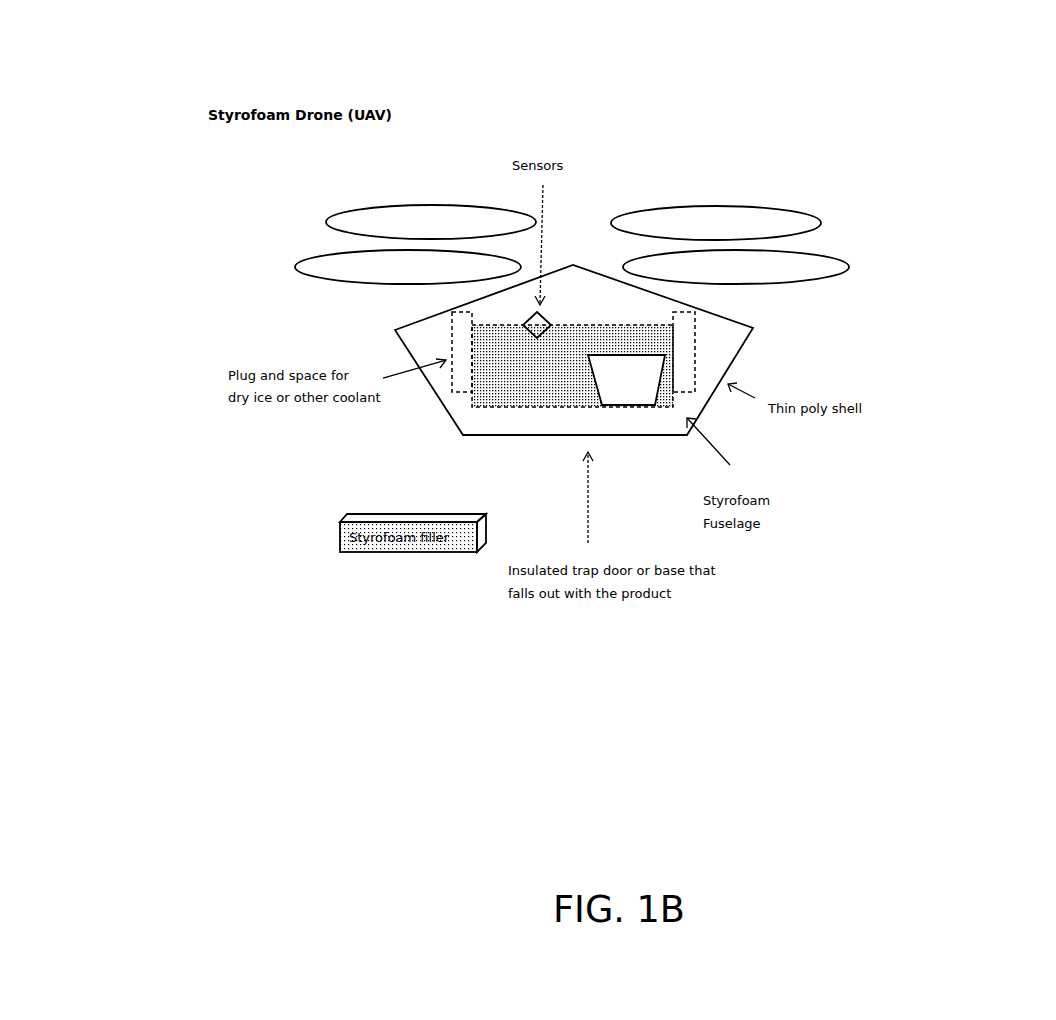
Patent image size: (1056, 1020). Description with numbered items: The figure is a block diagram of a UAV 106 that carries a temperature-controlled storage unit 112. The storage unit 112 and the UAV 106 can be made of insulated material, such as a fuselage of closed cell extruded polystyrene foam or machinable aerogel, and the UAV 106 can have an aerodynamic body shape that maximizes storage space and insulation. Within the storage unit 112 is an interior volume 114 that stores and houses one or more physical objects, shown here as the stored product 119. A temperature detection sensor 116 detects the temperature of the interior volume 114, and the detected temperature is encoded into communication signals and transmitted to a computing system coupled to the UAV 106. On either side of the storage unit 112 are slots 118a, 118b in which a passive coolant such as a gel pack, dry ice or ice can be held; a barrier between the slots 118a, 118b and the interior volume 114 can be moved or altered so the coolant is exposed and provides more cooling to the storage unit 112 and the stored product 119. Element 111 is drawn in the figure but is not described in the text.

The UAV 106 is at (650, 219).
The styrofoam fuselage with thin poly shell 111 is at (746, 349).
The temperature-controlled storage unit 112 is at (473, 393).
The interior volume 114 is at (576, 332).
The temperature detection sensor 116 is at (542, 313).
The slot 118a is at (462, 348).
The slot 118b is at (692, 348).
The stored product 119 is at (632, 397).